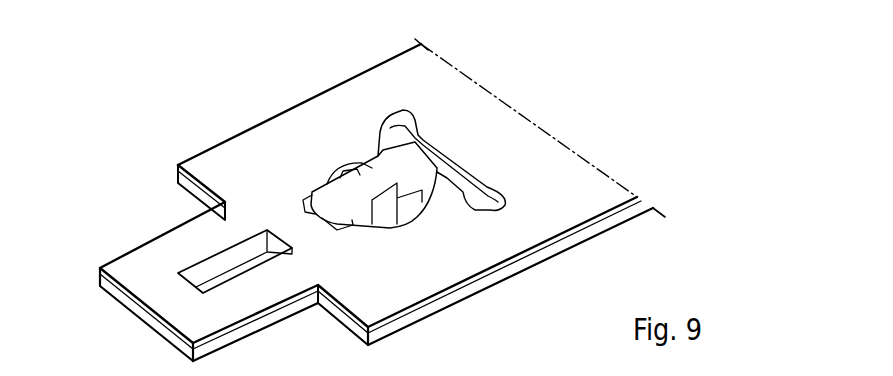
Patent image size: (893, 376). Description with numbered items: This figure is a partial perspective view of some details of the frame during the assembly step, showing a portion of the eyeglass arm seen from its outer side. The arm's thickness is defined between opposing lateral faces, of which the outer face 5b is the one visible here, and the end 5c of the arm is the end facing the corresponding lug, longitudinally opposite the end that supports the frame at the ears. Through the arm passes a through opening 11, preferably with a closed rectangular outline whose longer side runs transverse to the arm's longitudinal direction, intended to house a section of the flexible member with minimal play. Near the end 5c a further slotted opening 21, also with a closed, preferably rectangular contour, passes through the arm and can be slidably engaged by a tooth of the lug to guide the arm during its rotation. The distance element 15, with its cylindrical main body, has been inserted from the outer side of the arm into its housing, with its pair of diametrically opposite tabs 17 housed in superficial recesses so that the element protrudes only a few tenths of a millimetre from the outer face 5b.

The through opening 11 is at (477, 162).
The distance element 15 is at (376, 150).
The tabs 17 is at (322, 216).
The slotted opening 21 is at (277, 248).
The outer face of the arm 5b is at (545, 225).
The end of the arm 5c is at (150, 325).